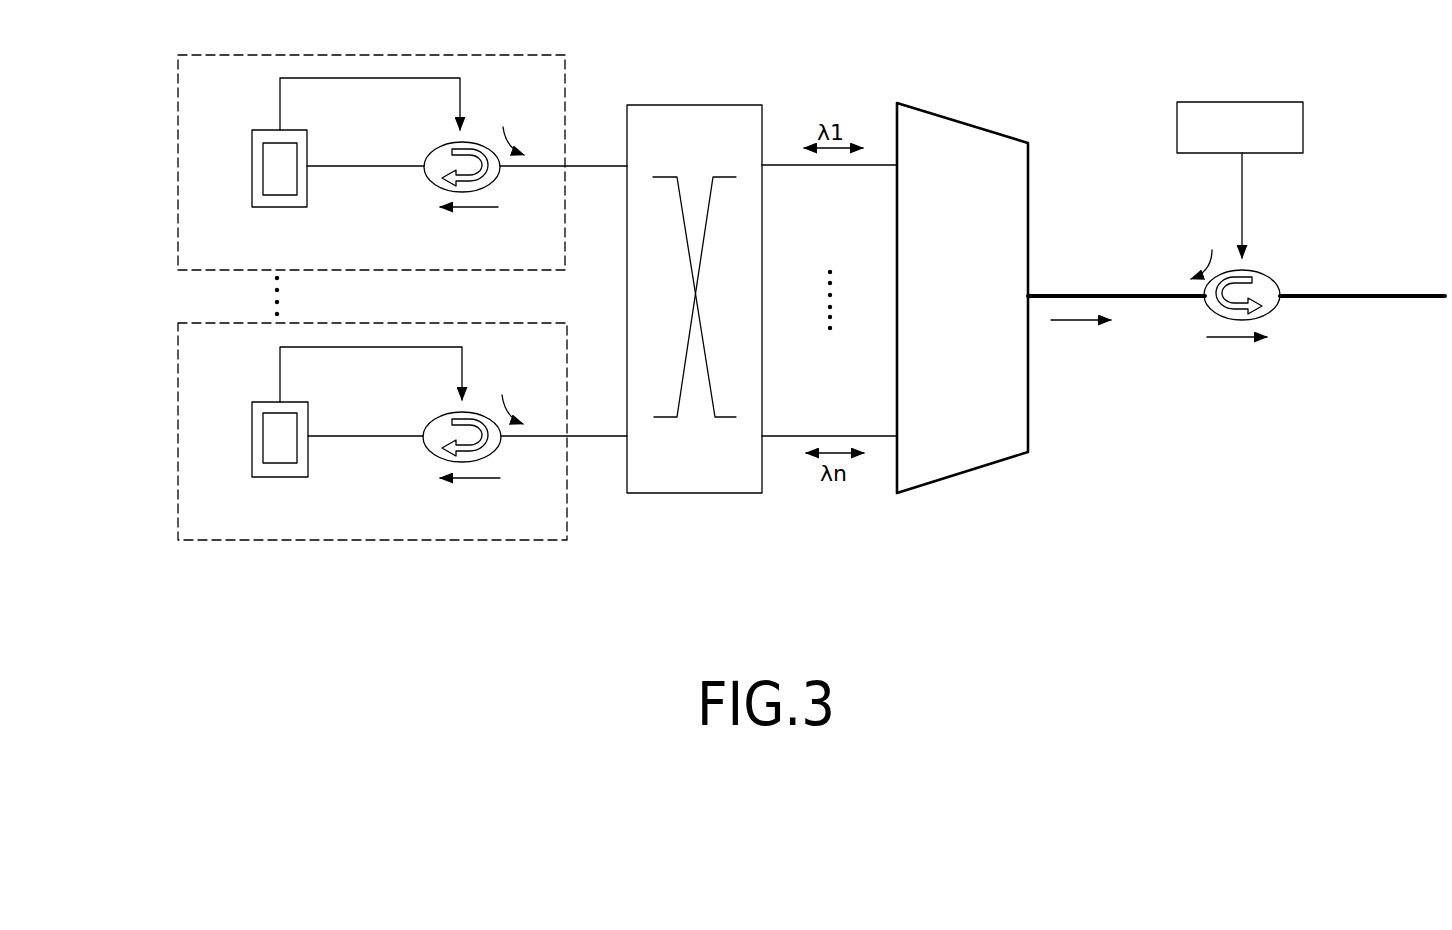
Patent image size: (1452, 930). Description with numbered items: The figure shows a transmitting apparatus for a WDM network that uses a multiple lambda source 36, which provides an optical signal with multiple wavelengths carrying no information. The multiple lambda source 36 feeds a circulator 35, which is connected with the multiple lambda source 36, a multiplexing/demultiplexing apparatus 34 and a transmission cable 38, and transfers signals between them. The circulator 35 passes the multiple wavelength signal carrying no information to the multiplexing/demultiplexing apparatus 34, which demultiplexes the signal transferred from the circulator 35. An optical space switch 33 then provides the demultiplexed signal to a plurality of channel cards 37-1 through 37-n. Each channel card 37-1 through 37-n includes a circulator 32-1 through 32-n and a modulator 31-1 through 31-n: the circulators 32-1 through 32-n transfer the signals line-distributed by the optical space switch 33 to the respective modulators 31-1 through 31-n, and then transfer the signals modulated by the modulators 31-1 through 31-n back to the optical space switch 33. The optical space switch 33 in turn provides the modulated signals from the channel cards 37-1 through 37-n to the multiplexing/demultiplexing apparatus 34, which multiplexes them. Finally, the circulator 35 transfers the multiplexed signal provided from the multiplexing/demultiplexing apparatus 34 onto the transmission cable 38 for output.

The modulator 31-1 is at (282, 208).
The modulator 31-n is at (282, 478).
The circulator 32-1 is at (427, 152).
The circulator 32-n is at (426, 423).
The optical space switch 33 is at (627, 300).
The multiplexing/demultiplexing apparatus 34 is at (958, 118).
The circulator 35 is at (1279, 282).
The multiple lambda source 36 is at (1177, 127).
The channel card 37-1 is at (364, 162).
The channel card 37-n is at (363, 431).
The transmission cable 38 is at (1362, 290).